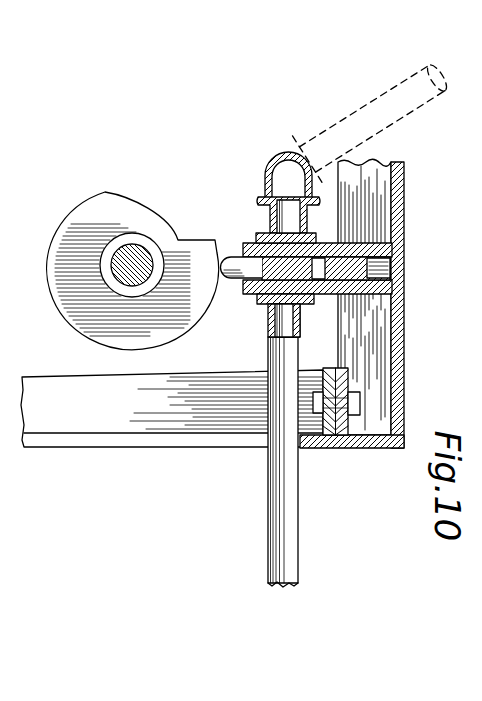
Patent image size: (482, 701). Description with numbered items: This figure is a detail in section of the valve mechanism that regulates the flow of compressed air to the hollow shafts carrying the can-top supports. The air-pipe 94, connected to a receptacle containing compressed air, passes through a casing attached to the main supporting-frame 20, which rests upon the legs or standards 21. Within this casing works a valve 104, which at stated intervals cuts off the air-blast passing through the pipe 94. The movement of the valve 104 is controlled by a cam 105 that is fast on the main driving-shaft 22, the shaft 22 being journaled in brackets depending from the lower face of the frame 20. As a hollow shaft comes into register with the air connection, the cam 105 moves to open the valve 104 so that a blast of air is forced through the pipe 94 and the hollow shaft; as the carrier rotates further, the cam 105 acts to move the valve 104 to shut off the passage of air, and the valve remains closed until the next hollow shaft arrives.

The main supporting-frame 20 is at (352, 333).
The legs or standards 21 is at (85, 425).
The main driving-shaft 22 is at (122, 268).
The air-pipe 94 is at (280, 558).
The valve 104 is at (238, 263).
The cam 105 is at (193, 297).